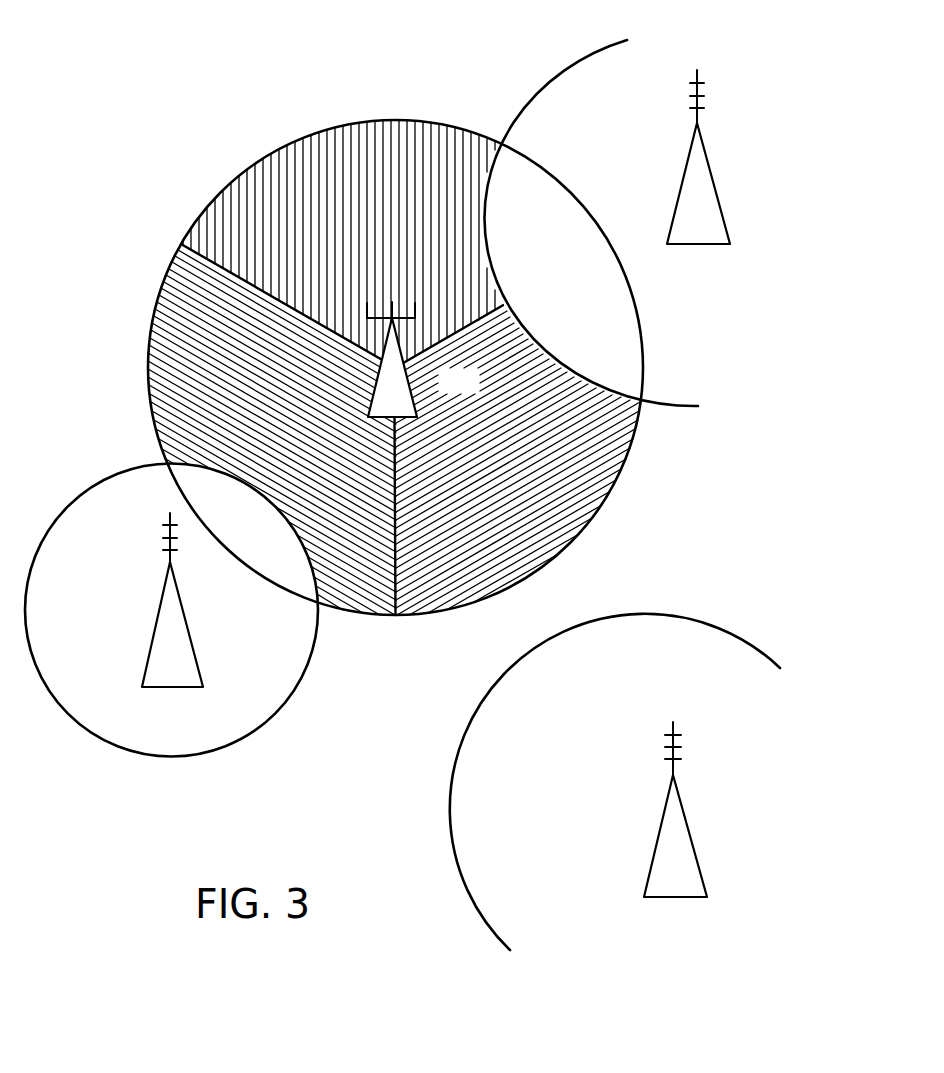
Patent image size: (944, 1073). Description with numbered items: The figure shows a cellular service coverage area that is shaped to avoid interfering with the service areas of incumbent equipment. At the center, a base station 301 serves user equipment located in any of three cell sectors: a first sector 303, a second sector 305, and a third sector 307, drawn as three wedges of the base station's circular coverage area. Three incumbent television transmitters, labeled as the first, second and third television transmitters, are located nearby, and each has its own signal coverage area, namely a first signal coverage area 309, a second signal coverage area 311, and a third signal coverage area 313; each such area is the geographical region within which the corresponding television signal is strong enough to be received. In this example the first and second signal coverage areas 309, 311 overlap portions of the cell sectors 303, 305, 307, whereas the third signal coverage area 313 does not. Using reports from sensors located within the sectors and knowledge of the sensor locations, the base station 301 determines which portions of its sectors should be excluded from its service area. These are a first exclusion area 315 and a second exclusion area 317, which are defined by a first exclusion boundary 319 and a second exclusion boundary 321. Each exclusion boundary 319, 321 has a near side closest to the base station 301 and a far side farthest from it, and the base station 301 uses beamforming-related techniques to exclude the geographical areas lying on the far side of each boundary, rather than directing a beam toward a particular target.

The base station 301 is at (418, 406).
The first sector 303 is at (393, 121).
The second sector 305 is at (623, 467).
The third sector 307 is at (158, 290).
The first signal coverage area 309 is at (299, 683).
The second signal coverage area 311 is at (558, 67).
The third signal coverage area 313 is at (457, 742).
The first exclusion area 315 is at (579, 302).
The second exclusion area 317 is at (259, 534).
The first exclusion boundary 319 is at (546, 358).
The second exclusion boundary 321 is at (299, 538).